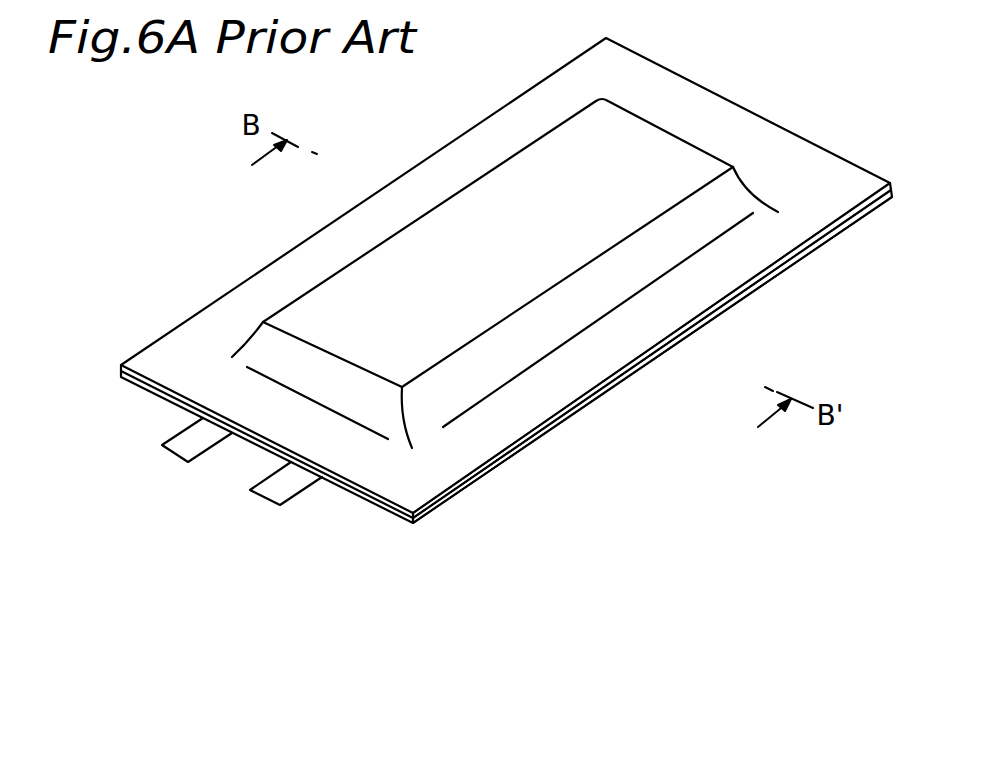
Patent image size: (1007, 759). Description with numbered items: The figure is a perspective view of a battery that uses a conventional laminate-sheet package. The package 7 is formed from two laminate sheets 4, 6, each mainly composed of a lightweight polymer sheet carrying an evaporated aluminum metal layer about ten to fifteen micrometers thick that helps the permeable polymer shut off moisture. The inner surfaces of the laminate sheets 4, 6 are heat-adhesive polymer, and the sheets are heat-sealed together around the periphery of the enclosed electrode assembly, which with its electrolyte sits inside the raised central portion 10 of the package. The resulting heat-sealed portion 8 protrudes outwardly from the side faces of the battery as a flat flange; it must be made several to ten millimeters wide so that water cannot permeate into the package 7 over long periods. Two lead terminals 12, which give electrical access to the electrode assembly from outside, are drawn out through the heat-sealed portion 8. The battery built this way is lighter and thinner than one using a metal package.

The laminate sheet 4 is at (522, 446).
The laminate sheet 6 is at (542, 432).
The package 7 is at (533, 512).
The heat-sealed portion 8 is at (345, 227).
The battery element housing portion 10 is at (473, 230).
The lead terminals 12 is at (273, 488).